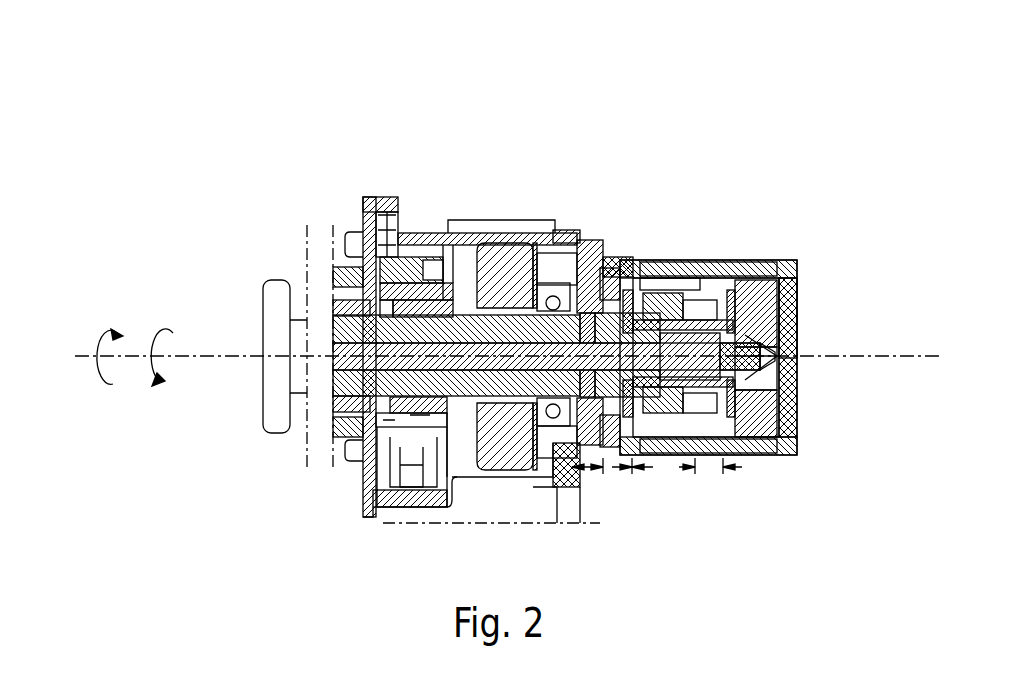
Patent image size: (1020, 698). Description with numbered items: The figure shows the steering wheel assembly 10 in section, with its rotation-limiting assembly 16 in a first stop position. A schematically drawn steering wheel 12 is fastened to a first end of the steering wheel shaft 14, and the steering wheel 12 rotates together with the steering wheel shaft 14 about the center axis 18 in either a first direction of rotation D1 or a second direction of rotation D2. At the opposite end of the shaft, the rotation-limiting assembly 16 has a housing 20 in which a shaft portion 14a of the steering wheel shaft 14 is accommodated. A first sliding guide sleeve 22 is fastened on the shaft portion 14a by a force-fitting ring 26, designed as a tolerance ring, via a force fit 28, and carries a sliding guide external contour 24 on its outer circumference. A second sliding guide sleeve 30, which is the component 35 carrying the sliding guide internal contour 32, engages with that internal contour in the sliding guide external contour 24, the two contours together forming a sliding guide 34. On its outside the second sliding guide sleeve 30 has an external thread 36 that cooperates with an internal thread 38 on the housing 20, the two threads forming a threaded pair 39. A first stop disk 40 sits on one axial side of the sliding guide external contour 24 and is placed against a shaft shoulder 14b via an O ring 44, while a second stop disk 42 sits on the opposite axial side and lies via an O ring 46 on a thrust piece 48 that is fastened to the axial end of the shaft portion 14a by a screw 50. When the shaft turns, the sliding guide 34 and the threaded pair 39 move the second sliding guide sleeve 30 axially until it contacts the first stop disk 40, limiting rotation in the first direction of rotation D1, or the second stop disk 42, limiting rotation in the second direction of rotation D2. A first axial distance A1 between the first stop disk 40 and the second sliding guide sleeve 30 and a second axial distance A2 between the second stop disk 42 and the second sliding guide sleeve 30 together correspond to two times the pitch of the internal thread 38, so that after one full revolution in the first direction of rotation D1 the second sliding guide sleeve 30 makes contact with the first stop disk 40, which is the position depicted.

The steering wheel assembly 10 is at (787, 122).
The steering wheel 12 is at (277, 300).
The steering wheel shaft 14 is at (303, 340).
The shaft portion 14a is at (762, 383).
The shaft shoulder 14b is at (592, 266).
The rotation-limiting assembly 16 is at (823, 139).
The center axis 18 is at (220, 356).
The housing 20 is at (787, 368).
The first sliding guide sleeve 22 is at (785, 432).
The sliding guide external contour 24 is at (800, 268).
The force-fitting ring 26 is at (785, 415).
The force fit 28 is at (785, 358).
The second sliding guide sleeve 30 is at (702, 318).
The sliding guide internal contour 32 is at (740, 290).
The sliding guide 34 is at (680, 452).
The component 35 is at (684, 262).
The external thread 36 is at (690, 300).
The internal thread 38 is at (650, 285).
The threaded pair 39 is at (668, 258).
The first stop disk 40 is at (613, 275).
The second stop disk 42 is at (742, 440).
The O ring 44 is at (614, 398).
The O ring 46 is at (790, 292).
The thrust piece 48 is at (772, 318).
The screw 50 is at (772, 336).
The first axial distance A1 is at (625, 472).
The second axial distance A2 is at (710, 472).
The first direction of rotation D1 is at (165, 333).
The second direction of rotation D2 is at (114, 332).